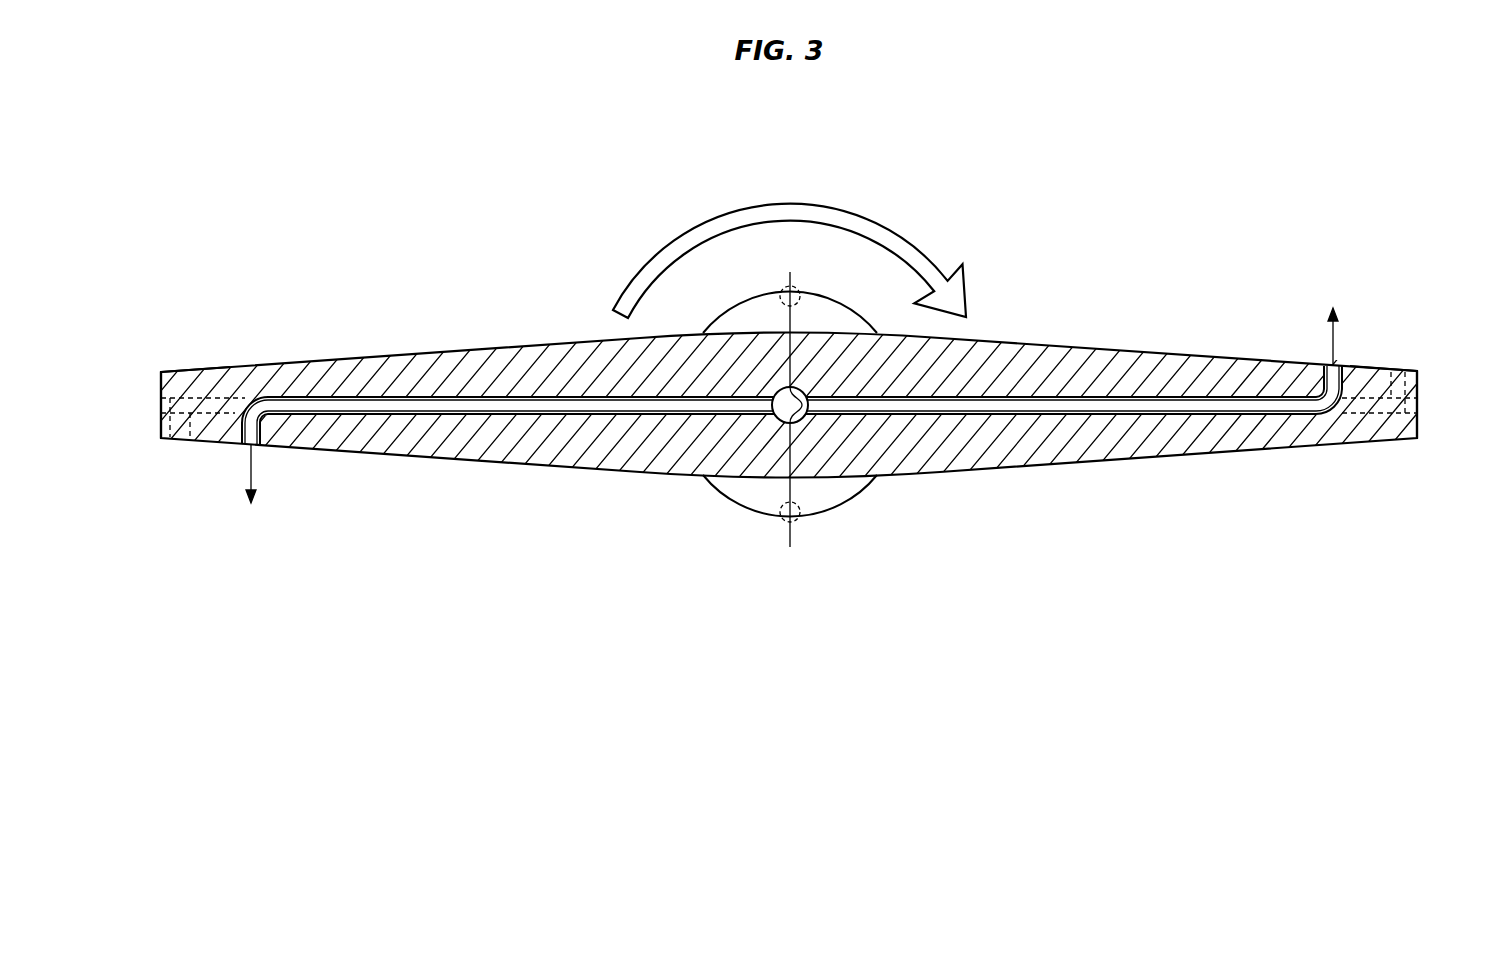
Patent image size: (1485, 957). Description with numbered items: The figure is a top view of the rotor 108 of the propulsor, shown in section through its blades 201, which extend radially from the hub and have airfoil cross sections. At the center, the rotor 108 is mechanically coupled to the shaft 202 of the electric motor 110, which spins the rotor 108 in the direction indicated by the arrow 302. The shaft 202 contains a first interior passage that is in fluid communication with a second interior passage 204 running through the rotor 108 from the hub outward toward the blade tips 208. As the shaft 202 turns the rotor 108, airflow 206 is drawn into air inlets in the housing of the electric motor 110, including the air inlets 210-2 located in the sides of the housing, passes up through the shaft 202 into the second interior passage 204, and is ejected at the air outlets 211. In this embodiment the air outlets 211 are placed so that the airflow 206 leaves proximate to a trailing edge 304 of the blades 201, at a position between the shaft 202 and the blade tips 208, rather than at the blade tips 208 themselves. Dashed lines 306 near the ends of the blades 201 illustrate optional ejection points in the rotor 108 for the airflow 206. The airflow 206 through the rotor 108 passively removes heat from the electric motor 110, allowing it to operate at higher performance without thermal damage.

The rotor 108 is at (1060, 333).
The electric motor 110 is at (840, 516).
The blades 201 is at (350, 358).
The shaft 202 is at (782, 412).
The second interior passage 204 is at (466, 412).
The airflow 206 is at (250, 476).
The blade tips 208 is at (173, 355).
The air inlets 210-2 is at (812, 302).
The air outlets 211 is at (262, 458).
The arrow 302 is at (683, 232).
The trailing edge 304 is at (194, 473).
The dashed lines 306 is at (204, 397).